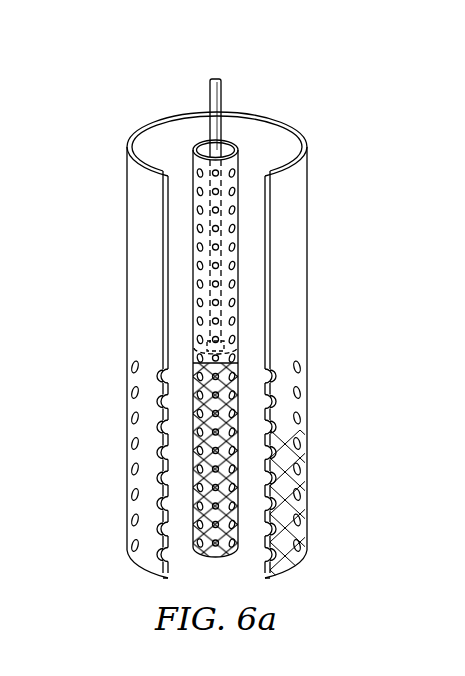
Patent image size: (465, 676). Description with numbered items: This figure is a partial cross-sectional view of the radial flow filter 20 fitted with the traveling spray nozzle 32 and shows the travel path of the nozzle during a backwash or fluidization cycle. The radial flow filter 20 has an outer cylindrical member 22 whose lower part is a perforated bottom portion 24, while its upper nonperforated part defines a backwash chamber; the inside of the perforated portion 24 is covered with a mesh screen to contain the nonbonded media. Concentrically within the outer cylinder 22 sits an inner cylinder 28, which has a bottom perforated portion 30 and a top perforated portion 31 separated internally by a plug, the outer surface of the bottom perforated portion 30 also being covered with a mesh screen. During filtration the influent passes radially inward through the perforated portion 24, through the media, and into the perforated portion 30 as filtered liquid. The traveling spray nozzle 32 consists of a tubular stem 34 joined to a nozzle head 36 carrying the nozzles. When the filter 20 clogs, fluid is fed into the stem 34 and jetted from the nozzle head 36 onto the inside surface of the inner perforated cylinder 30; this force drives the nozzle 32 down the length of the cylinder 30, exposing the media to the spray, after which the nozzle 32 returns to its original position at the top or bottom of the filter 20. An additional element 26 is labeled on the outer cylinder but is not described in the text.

The radial flow filter 20 is at (299, 90).
The outer cylindrical member 22 is at (305, 237).
The perforated bottom portion 24 is at (305, 452).
The side holes in outer sheath 26 is at (168, 521).
The inner cylinder 28 is at (193, 158).
The bottom perforated portion 30 is at (193, 412).
The top perforated portion 31 is at (193, 290).
The traveling spray nozzle 32 is at (206, 86).
The tubular stem 34 is at (222, 101).
The nozzle head 36 is at (240, 343).